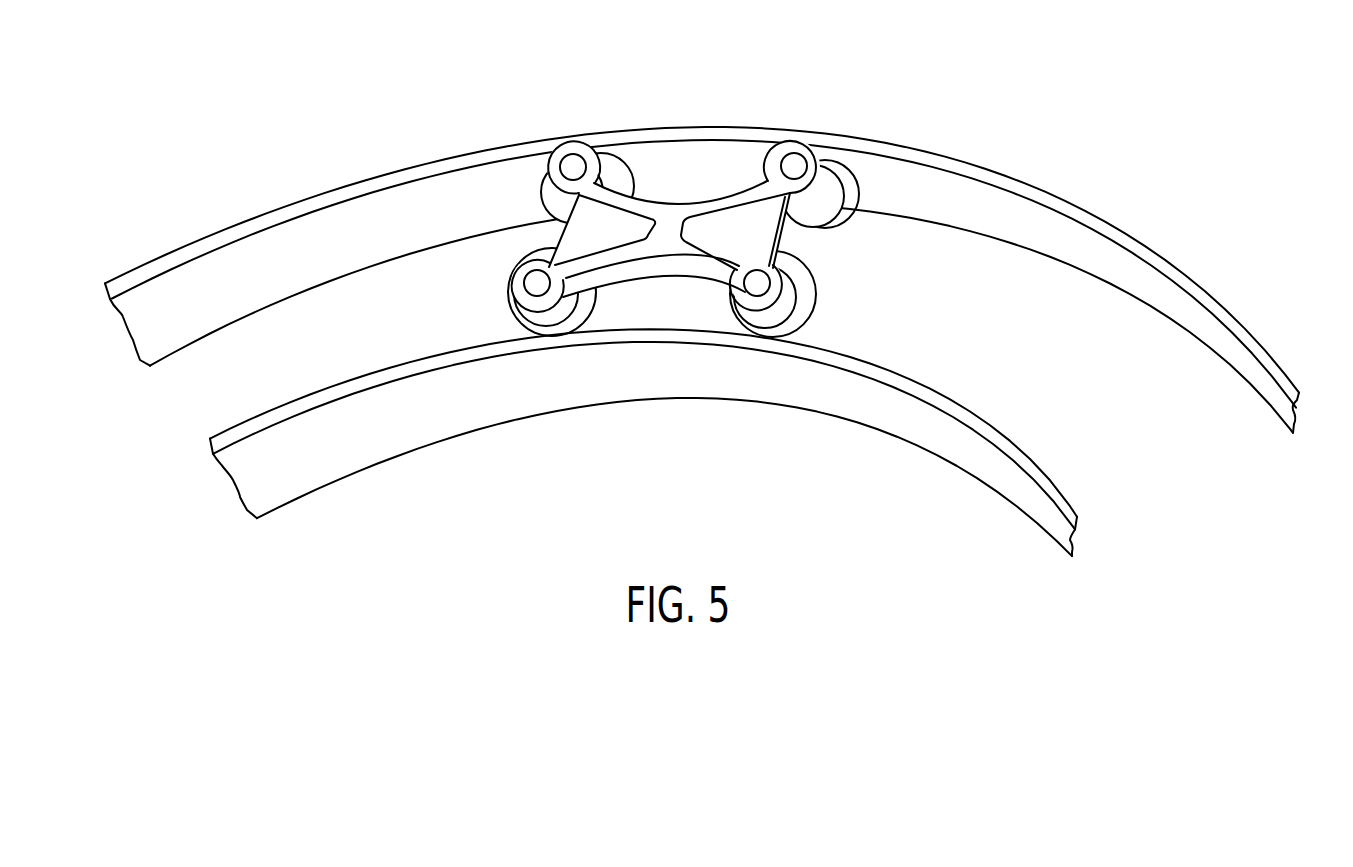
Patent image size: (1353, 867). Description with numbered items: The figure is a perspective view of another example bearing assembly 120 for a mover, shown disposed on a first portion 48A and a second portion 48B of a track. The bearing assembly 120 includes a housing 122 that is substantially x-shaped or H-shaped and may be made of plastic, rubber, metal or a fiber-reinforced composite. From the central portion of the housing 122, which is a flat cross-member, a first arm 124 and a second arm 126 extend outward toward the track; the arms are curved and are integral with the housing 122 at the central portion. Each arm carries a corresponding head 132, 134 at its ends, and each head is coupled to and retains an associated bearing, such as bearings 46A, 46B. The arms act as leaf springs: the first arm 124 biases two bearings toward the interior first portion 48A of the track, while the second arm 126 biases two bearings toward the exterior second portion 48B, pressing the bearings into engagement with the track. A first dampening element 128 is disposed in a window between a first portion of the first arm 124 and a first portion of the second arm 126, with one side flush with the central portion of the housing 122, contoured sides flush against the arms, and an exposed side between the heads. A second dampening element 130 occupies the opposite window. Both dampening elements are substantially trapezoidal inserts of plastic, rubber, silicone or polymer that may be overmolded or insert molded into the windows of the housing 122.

The bearing assembly 120 is at (665, 267).
The housing 122 is at (632, 281).
The first arm 124 is at (709, 270).
The second arm 126 is at (733, 190).
The first dampening element 128 is at (784, 257).
The second dampening element 130 is at (548, 246).
The head 132 is at (768, 315).
The head 134 is at (810, 157).
The bearing 46A is at (708, 362).
The bearing 46B is at (848, 222).
The first portion of the track 48A is at (318, 488).
The second portion of the track 48B is at (262, 213).